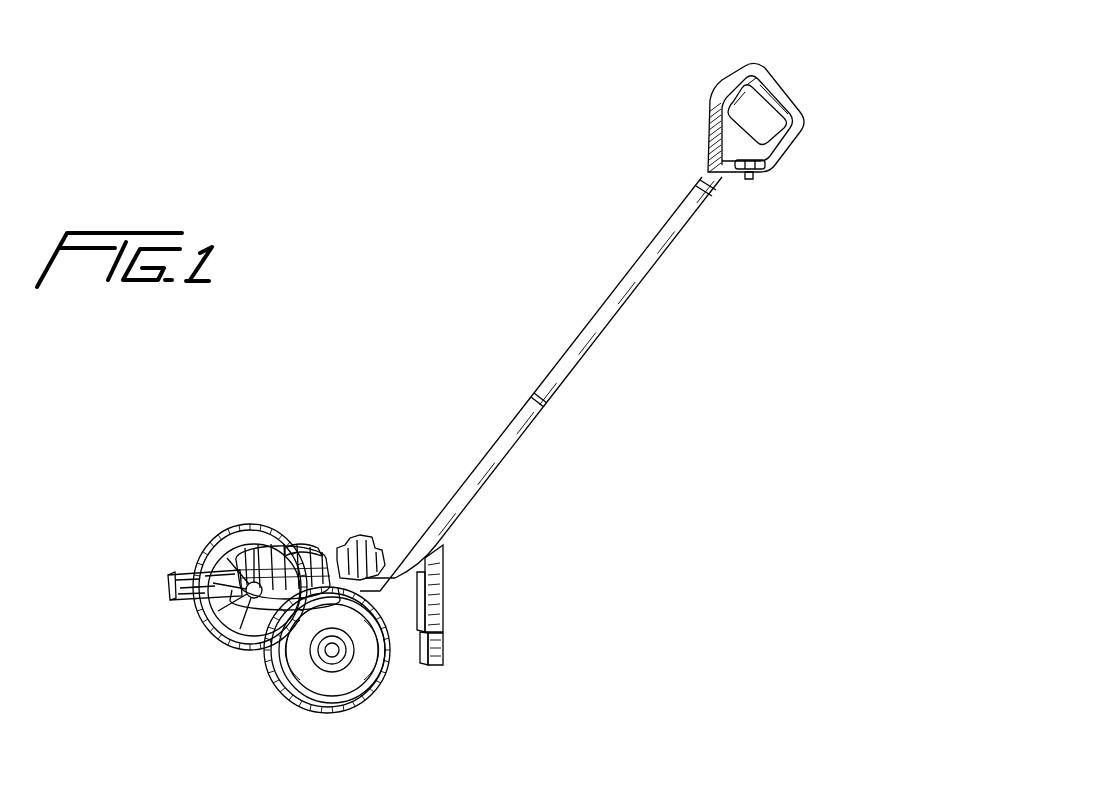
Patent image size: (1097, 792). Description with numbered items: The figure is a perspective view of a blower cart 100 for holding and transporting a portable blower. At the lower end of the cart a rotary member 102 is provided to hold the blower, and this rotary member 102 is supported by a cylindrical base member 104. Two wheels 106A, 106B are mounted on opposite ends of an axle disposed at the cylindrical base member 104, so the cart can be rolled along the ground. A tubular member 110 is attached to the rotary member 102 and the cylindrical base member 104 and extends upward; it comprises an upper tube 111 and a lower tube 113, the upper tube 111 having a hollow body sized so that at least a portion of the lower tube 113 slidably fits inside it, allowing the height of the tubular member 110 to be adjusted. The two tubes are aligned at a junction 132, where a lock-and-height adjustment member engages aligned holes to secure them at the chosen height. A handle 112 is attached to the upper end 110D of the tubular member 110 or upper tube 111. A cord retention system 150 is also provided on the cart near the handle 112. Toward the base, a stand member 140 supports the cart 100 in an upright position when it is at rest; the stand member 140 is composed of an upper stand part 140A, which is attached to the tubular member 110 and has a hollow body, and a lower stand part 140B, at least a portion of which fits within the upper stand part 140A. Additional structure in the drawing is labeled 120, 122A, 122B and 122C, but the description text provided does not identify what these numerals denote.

The blower cart 100 is at (432, 198).
The rotary member 102 is at (166, 549).
The cylindrical base member 104 is at (222, 637).
The wheel 106A is at (252, 523).
The wheel 106B is at (372, 688).
The tubular member 110 is at (548, 231).
The upper end 110D is at (713, 197).
The upper tube 111 is at (593, 335).
The handle 112 is at (810, 96).
The lower tube 113 is at (515, 430).
The cutting reel assembly 120 is at (322, 528).
The reel extension arm 122A is at (170, 582).
The reel mounting bracket 122B is at (360, 533).
The reel guard 122C is at (292, 545).
The junction 132 is at (548, 398).
The stand member 140 is at (554, 546).
The upper stand part 140A is at (445, 577).
The lower stand part 140B is at (443, 643).
The cord retention system 150 is at (757, 180).